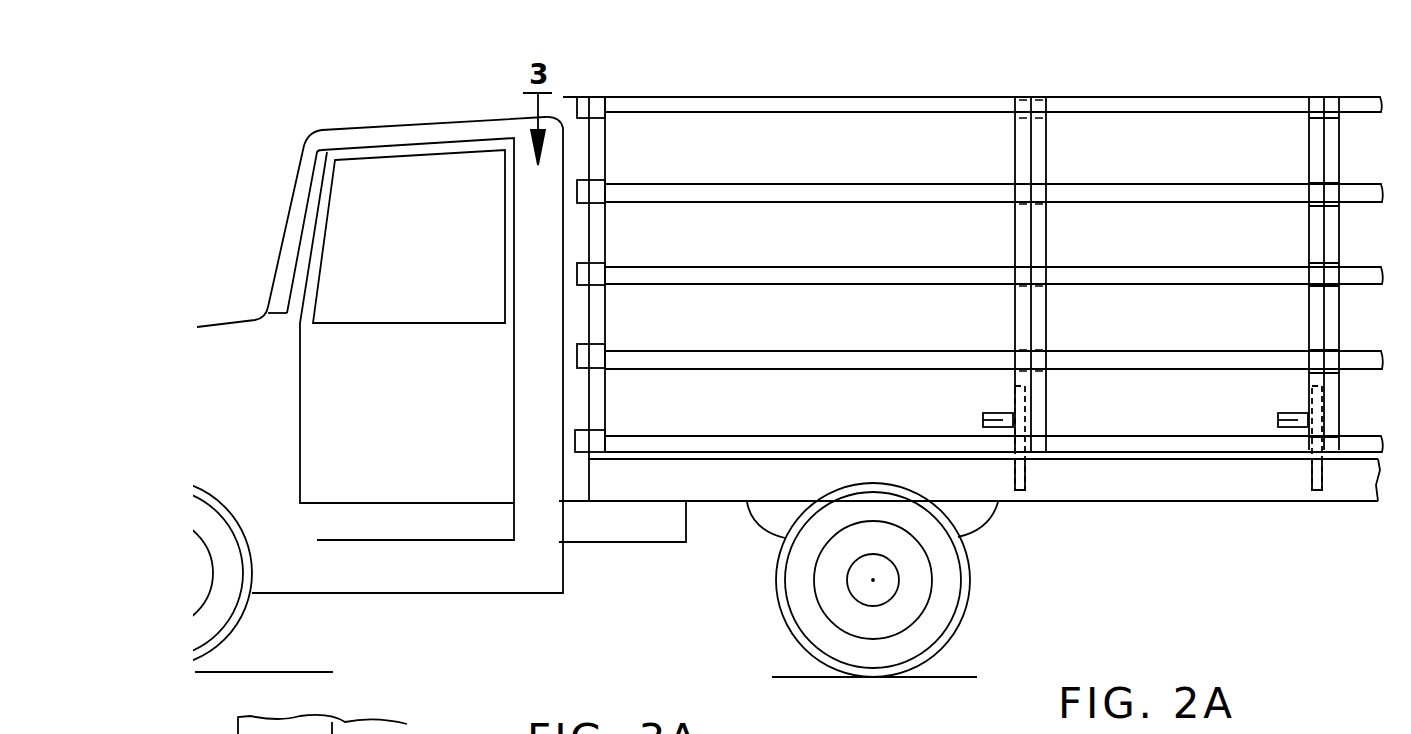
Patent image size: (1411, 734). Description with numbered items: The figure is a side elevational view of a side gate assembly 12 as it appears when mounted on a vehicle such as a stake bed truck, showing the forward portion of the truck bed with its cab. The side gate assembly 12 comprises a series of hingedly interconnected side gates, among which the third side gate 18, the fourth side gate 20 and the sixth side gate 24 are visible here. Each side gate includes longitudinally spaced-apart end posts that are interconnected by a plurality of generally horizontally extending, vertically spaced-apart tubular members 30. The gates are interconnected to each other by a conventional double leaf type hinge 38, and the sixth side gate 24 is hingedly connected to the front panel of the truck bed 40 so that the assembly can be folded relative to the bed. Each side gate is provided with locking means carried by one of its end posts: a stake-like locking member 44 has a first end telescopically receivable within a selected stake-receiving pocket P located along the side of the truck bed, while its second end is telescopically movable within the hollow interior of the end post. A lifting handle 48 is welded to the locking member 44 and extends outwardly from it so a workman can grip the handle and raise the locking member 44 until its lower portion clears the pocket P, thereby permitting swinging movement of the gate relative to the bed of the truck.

The side gate assembly 12 is at (940, 86).
The third side gate 18 is at (1147, 92).
The fourth side gate 20 is at (1366, 96).
The sixth side gate 24 is at (762, 93).
The tubular members 30 is at (812, 275).
The double leaf type hinge 38 is at (597, 272).
The front panel of the truck bed 40 is at (585, 147).
The locking member 44 is at (1010, 398).
The lifting handle 48 is at (983, 418).
The stake-receiving pocket P is at (1027, 473).